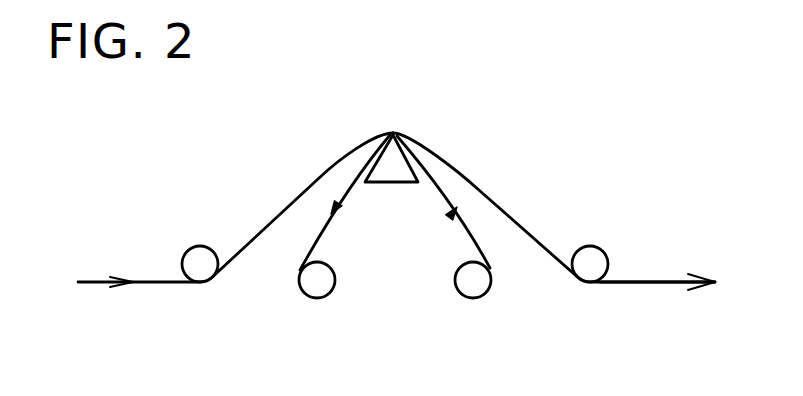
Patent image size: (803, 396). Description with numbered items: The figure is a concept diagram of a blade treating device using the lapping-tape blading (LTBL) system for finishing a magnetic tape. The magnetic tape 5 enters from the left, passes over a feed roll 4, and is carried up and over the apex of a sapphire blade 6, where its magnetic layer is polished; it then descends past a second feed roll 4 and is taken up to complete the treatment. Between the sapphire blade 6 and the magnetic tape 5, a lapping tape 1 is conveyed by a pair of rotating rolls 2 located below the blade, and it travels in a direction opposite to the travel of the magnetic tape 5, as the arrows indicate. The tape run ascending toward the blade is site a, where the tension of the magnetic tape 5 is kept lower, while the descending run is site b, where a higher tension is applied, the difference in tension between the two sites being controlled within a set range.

The lapping tape 1 is at (322, 230).
The rotating roll 2 is at (320, 279).
The feed roll 4 is at (202, 267).
The magnetic tape 5 is at (660, 280).
The sapphire blade 6 is at (398, 167).
The site a is at (288, 199).
The site b is at (518, 220).